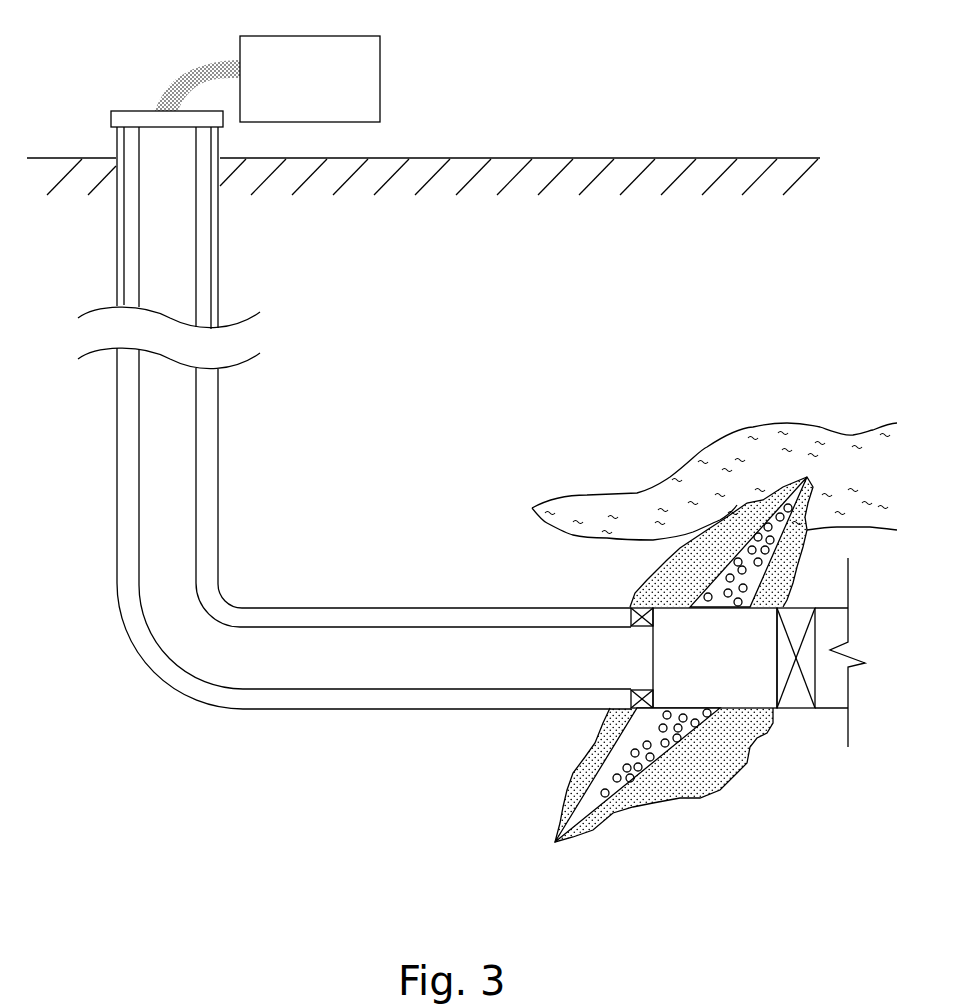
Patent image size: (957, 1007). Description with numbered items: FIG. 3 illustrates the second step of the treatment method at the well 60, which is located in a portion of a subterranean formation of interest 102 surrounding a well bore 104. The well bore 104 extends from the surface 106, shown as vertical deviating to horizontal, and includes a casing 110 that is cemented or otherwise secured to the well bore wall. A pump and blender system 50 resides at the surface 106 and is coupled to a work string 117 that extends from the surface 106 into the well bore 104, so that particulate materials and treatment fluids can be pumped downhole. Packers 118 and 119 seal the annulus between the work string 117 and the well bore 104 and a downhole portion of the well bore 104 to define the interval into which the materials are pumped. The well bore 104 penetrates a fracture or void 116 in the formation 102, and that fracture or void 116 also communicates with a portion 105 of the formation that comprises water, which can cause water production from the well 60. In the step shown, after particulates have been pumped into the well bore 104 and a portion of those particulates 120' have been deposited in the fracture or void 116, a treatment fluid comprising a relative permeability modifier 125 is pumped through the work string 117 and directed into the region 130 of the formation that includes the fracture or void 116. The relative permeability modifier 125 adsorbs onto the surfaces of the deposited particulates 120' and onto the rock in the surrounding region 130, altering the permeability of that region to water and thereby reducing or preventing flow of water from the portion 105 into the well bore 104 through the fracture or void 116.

The pump and blender system 50 is at (321, 88).
The well 60 is at (134, 693).
The subterranean formation 102 is at (495, 423).
The well bore 104 is at (133, 248).
The water-bearing portion of the formation 105 is at (878, 483).
The surface 106 is at (584, 157).
The casing 110 is at (124, 290).
The fracture or void 116 is at (711, 582).
The work string 117 is at (200, 465).
The packer 118 is at (638, 607).
The packer 119 is at (815, 630).
The deposited particulates 120' is at (681, 625).
The relative permeability modifier 125 is at (192, 64).
The region of the formation 130 is at (797, 594).